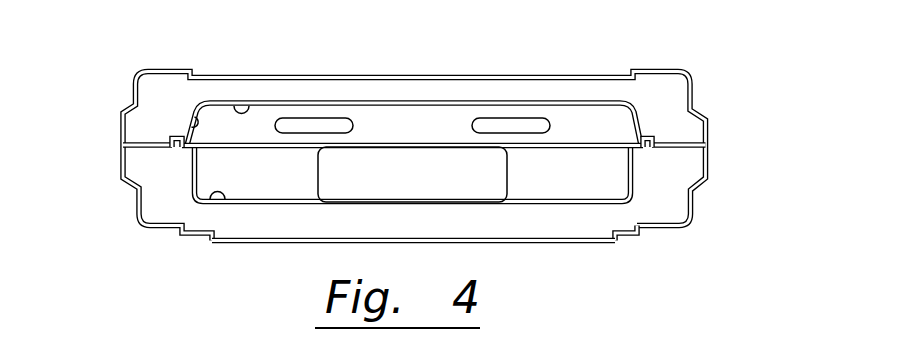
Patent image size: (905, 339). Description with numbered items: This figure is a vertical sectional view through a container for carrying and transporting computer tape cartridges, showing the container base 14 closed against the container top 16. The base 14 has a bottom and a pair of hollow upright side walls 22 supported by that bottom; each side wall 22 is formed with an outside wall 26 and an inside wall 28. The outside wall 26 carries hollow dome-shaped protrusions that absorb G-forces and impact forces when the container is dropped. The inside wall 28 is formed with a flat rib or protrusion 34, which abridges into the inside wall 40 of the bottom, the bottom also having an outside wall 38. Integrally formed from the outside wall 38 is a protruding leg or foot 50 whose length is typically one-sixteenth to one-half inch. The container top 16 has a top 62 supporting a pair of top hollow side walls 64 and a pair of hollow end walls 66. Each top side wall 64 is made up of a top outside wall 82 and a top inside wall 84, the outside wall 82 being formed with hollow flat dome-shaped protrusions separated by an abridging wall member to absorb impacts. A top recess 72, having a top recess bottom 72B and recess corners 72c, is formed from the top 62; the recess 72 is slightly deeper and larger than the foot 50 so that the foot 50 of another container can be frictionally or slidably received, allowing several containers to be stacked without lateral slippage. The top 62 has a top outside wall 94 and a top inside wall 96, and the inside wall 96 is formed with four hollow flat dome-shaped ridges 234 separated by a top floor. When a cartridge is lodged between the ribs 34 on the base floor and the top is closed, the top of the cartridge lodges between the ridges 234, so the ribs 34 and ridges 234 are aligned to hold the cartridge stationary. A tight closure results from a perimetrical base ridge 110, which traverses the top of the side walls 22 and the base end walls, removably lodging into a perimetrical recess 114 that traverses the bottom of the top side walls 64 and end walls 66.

The container base 14 is at (408, 170).
The container top 16 is at (283, 66).
The hollow upright side wall 22 is at (406, 162).
The outside wall 26 is at (133, 200).
The inside wall 28 is at (198, 168).
The flat rib or protrusion 34 is at (425, 163).
The outside wall of the bottom 38 is at (543, 245).
The inside wall of the bottom 40 is at (217, 196).
The protruding leg or foot 50 is at (607, 243).
The top 62 is at (150, 68).
The top hollow side wall 64 is at (131, 93).
The hollow end wall 66 is at (721, 328).
The top recess 72 is at (500, 75).
The top recess bottom 72B is at (540, 75).
The recess corner 72c is at (632, 70).
The top outside wall 82 is at (135, 78).
The top inside wall 84 is at (187, 127).
The top outside wall 94 is at (180, 68).
The top inside wall 96 is at (236, 100).
The perimetrical base ridge 110 is at (187, 140).
The perimetrical recess 114 is at (184, 140).
The hollow flat dome-shaped ridge 234 is at (308, 127).